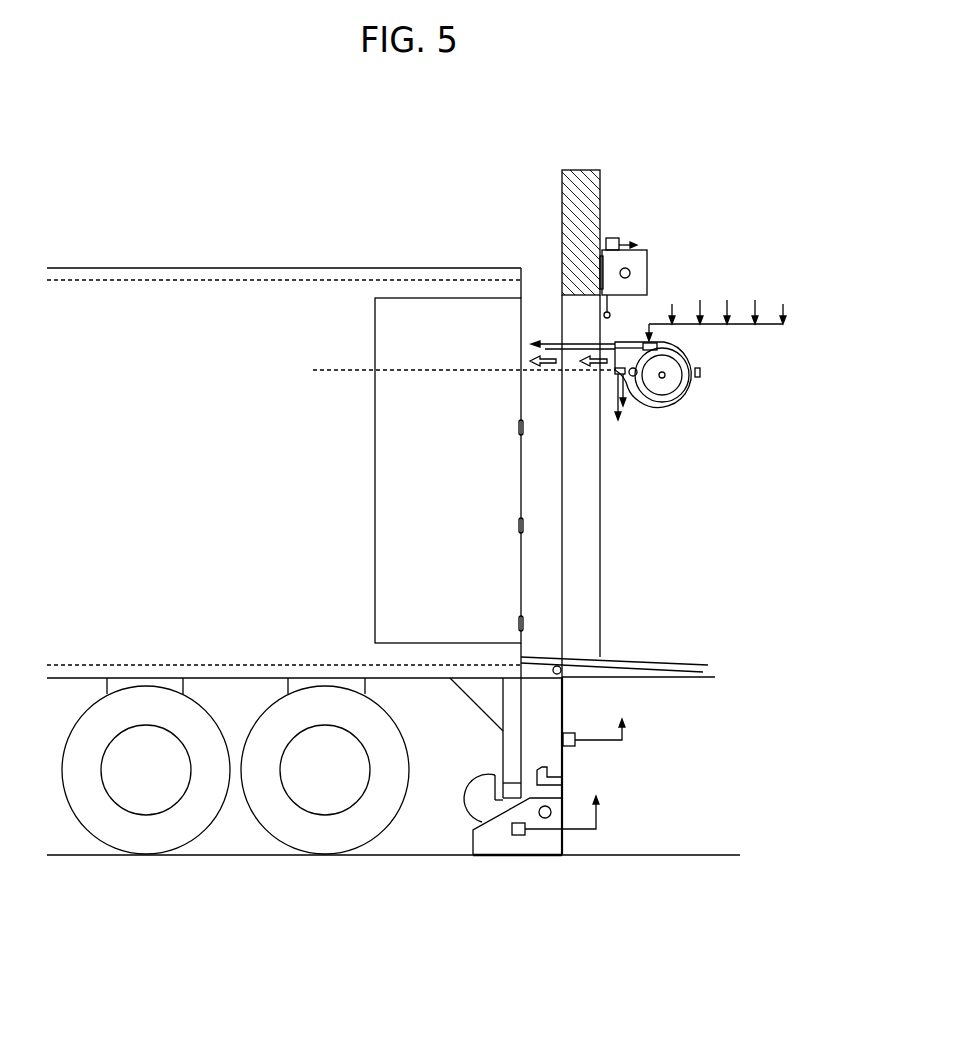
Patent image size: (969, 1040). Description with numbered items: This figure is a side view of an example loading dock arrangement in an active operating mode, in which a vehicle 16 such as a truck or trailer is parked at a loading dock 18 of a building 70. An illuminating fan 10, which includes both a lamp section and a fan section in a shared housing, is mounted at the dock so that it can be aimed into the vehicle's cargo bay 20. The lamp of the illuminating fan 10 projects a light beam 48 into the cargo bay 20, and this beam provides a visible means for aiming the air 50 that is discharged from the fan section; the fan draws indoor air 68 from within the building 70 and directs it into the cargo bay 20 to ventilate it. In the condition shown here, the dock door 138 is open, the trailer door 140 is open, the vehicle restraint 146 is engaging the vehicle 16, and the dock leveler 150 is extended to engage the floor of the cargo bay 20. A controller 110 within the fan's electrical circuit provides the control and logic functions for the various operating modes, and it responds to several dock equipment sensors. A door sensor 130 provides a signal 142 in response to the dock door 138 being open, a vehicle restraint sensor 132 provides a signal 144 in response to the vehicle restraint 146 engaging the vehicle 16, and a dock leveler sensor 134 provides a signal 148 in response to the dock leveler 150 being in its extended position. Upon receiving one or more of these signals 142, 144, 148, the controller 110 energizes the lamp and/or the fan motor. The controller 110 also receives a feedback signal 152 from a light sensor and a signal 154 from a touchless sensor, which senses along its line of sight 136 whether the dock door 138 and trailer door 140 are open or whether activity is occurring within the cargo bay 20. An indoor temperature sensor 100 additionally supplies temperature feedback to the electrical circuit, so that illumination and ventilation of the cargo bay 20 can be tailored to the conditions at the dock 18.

The illuminating fan 10 is at (673, 404).
The vehicle 16 is at (218, 268).
The loading dock 18 is at (448, 735).
The cargo bay 20 is at (251, 664).
The light beam 48 is at (556, 343).
The air 50 is at (544, 372).
The indoor air 68 is at (660, 540).
The building 70 is at (561, 202).
The indoor temperature sensor 100 is at (700, 372).
The controller 110 is at (657, 343).
The door sensor 130 is at (613, 238).
The vehicle restraint sensor 132 is at (519, 836).
The dock leveler sensor 134 is at (568, 748).
The line of sight 136 is at (425, 372).
The dock door 138 is at (606, 305).
The trailer door 140 is at (374, 562).
The signal 142 is at (626, 240).
The signal 144 is at (598, 812).
The vehicle restraint 146 is at (474, 785).
The signal 148 is at (626, 730).
The dock leveler 150 is at (635, 659).
The feedback signal 152 is at (624, 391).
The signal 154 is at (613, 410).